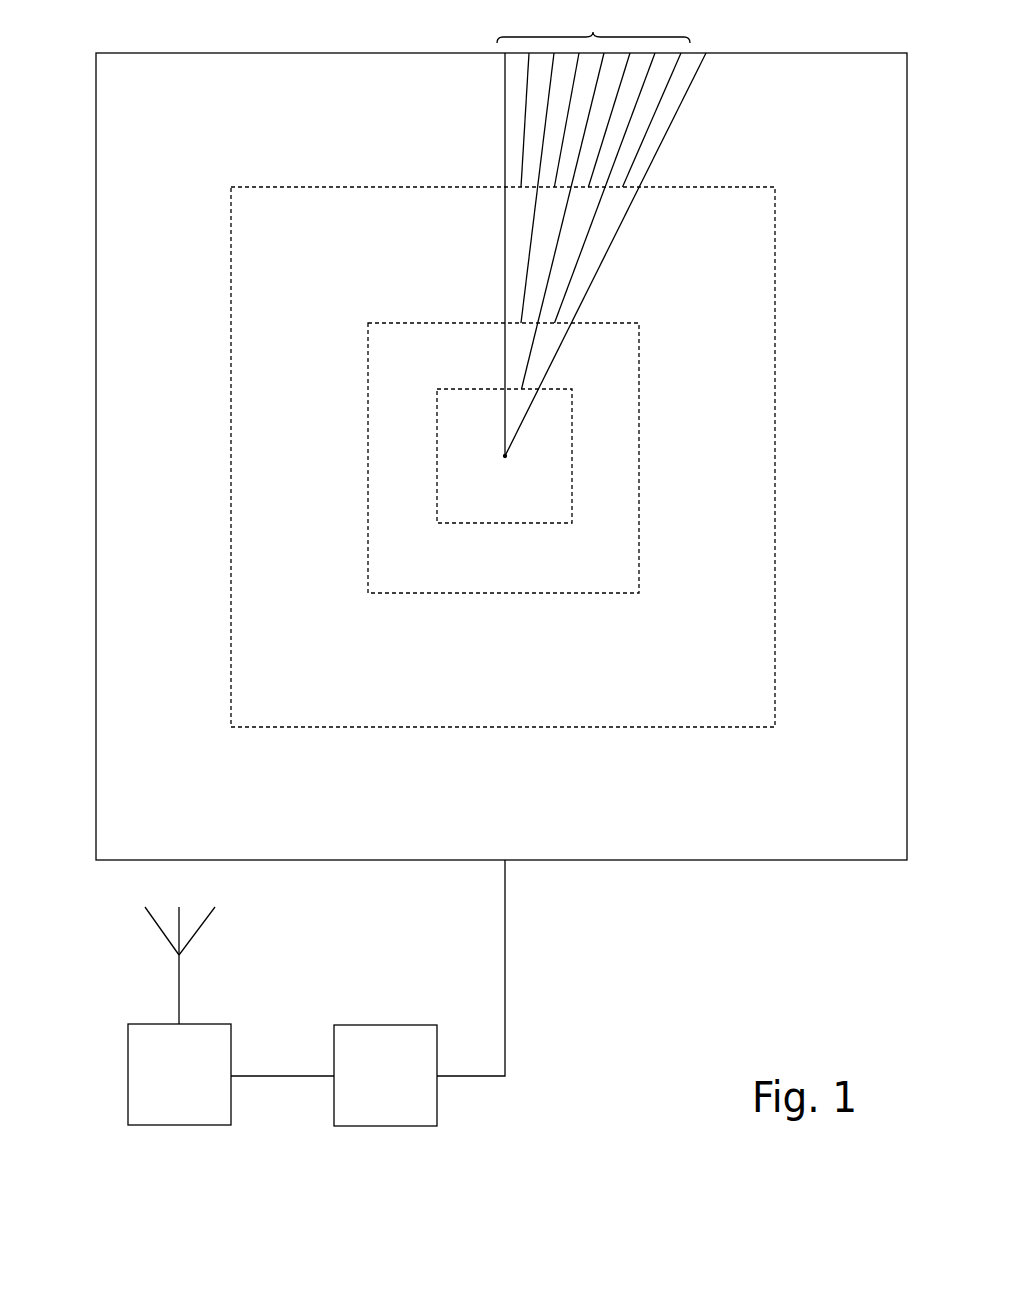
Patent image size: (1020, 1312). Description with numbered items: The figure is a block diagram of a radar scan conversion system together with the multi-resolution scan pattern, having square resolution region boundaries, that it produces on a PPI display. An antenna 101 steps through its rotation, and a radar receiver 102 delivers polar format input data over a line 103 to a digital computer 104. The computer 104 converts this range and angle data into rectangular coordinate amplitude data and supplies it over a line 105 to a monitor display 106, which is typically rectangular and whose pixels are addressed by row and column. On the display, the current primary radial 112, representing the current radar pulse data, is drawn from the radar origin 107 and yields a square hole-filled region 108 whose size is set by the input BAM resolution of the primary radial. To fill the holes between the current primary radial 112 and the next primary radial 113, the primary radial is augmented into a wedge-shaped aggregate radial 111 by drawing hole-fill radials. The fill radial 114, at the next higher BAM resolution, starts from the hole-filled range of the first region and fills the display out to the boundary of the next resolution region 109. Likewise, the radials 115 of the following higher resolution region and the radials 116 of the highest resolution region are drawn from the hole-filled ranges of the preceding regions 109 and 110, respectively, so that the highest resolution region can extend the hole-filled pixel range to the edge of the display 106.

The antenna 101 is at (195, 933).
The radar receiver 102 is at (128, 1057).
The polar format input data line 103 is at (298, 1075).
The digital computer 104 is at (403, 1025).
The rectangular coordinate data line 105 is at (505, 993).
The monitor display 106 is at (697, 861).
The radar origin 107 is at (503, 455).
The square hole-filled region 108 is at (437, 490).
The resolution region N+1 109 is at (368, 490).
The resolution region N+2 110 is at (230, 488).
The wedge-shaped aggregate radial 111 is at (593, 22).
The current primary radial 112 is at (505, 103).
The next primary radial 113 is at (596, 272).
The fill radial 114 is at (530, 356).
The radials in resolution region N+2 115 is at (579, 257).
The radials in resolution region N+3 116 is at (525, 128).